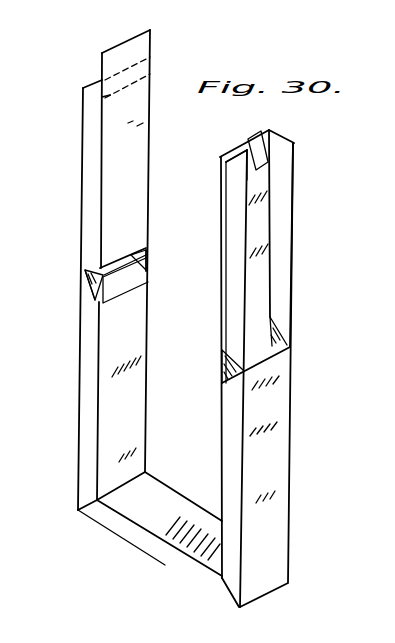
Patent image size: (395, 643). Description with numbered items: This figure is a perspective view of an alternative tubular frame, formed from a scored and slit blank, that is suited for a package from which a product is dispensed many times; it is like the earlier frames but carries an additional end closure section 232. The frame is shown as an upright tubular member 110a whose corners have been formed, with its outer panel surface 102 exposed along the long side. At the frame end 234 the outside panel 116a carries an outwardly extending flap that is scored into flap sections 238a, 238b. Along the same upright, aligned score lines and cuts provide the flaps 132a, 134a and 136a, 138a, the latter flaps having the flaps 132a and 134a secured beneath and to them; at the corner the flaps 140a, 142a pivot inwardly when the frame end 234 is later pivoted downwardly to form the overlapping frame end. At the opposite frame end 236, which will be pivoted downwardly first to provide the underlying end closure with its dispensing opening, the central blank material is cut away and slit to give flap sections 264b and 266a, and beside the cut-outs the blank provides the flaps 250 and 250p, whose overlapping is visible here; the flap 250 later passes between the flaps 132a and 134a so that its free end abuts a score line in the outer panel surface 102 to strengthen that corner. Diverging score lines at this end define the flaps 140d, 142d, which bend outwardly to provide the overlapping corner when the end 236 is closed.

The frame end 234 is at (58, 72).
The first upright member 110a is at (92, 128).
The outside panel 116a is at (103, 160).
The flap section 238a is at (122, 42).
The flap section 238b is at (143, 72).
The flap 132a is at (116, 266).
The flap 134a is at (126, 286).
The flap 136a is at (148, 257).
The flap 138a is at (147, 269).
The flap 140a is at (92, 270).
The flap 142a is at (88, 288).
The outer panel surface 102 is at (268, 478).
The end closure section 232 is at (299, 245).
The frame end 236 is at (304, 151).
The flap section 266a is at (285, 173).
The flap section 264b is at (232, 273).
The flap 250 is at (252, 157).
The flap 250p is at (275, 118).
The flap 142d is at (223, 348).
The flap 140d is at (222, 374).